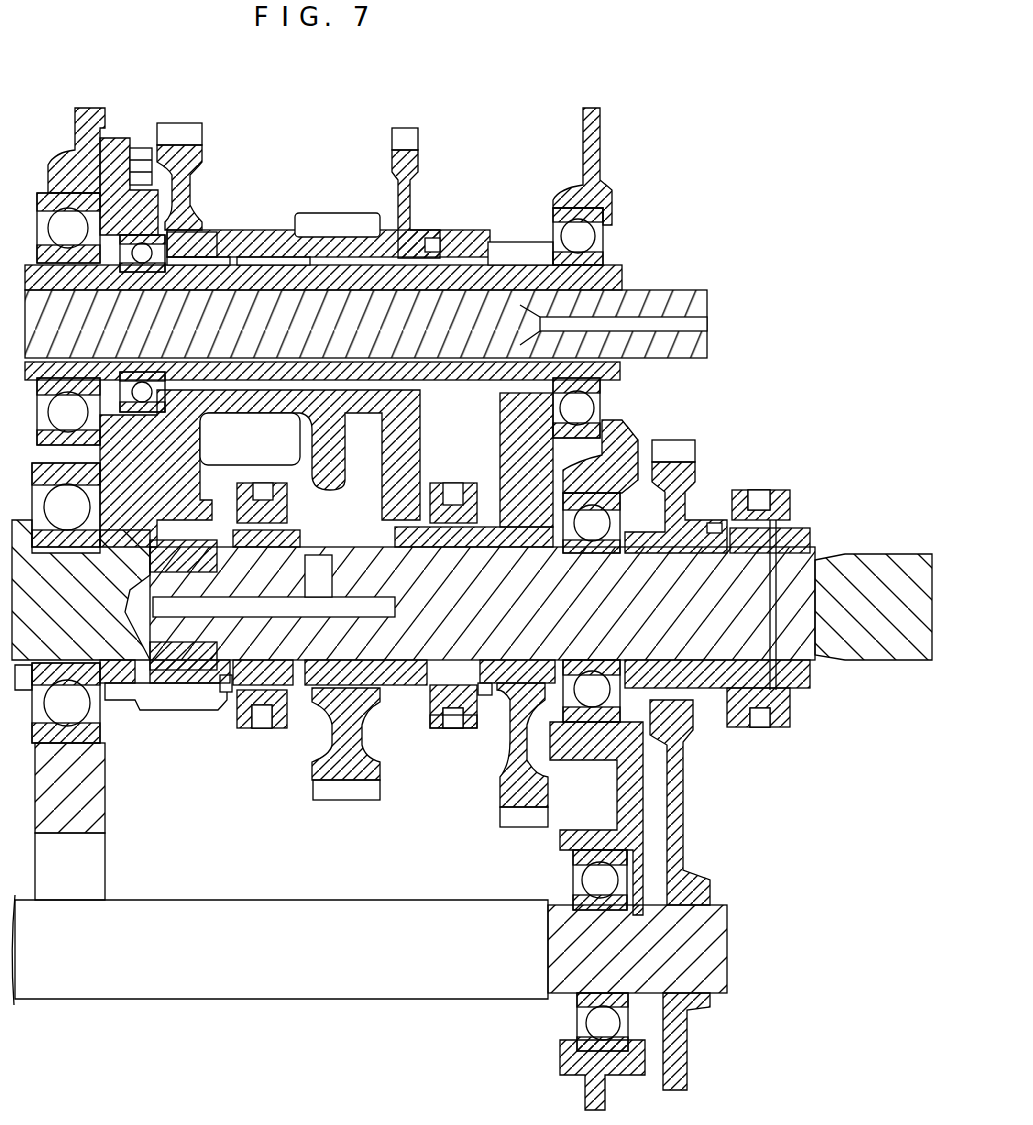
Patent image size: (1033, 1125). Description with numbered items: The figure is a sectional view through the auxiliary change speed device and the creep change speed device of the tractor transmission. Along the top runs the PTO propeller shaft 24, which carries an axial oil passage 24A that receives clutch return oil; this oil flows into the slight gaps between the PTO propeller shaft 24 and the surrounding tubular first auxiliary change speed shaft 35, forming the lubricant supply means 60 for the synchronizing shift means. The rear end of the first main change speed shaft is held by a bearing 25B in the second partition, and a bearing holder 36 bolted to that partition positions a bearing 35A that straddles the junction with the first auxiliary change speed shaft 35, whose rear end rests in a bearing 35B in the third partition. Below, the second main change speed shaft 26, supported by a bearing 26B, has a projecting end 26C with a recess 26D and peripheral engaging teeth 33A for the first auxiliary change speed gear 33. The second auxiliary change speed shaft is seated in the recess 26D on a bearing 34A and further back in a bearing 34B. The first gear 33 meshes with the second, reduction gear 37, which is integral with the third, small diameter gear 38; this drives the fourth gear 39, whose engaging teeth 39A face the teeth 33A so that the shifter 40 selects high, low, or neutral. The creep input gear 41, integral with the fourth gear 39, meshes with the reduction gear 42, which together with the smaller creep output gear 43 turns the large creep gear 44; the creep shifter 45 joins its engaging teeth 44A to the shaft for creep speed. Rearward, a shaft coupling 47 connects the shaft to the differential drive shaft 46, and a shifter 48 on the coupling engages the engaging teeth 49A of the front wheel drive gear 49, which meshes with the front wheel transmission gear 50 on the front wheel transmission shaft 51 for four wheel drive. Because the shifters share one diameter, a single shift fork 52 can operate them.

The PTO propeller shaft 24 is at (397, 289).
The oil passage 24A is at (655, 318).
The bearing 25B is at (68, 203).
The second main change speed shaft 26 is at (216, 525).
The bearing 26B is at (73, 753).
The projecting end 26C is at (120, 685).
The recess 26D is at (185, 485).
The first auxiliary change speed gear 33 is at (167, 710).
The engaging teeth 33A is at (222, 693).
The bearing 34A is at (180, 668).
The bearing 34B is at (600, 500).
The first auxiliary change speed shaft 35 is at (465, 260).
The bearing 35A is at (200, 232).
The bearing 35B is at (590, 214).
The bearing holder 36 is at (115, 143).
The second, reduction gear 37 is at (180, 123).
The third, small diameter gear 38 is at (330, 212).
The fourth gear 39 is at (358, 800).
The engaging teeth 39A is at (293, 520).
The shifter 40 is at (293, 715).
The creep input gear 41 is at (407, 710).
The reduction gear 42 is at (404, 128).
The creep output gear 43 is at (525, 242).
The creep gear 44 is at (525, 827).
The engaging teeth 44A is at (485, 695).
The creep shifter 45 is at (438, 730).
The differential drive shaft 46 is at (870, 560).
The shaft coupling 47 is at (795, 520).
The shifter 48 is at (790, 717).
The front wheel drive gear 49 is at (680, 440).
The engaging teeth 49A is at (712, 523).
The front wheel transmission gear 50 is at (690, 822).
The front wheel transmission shaft 51 is at (322, 1000).
The shift fork 52 is at (453, 483).
The lubricant supply means 60 is at (432, 238).